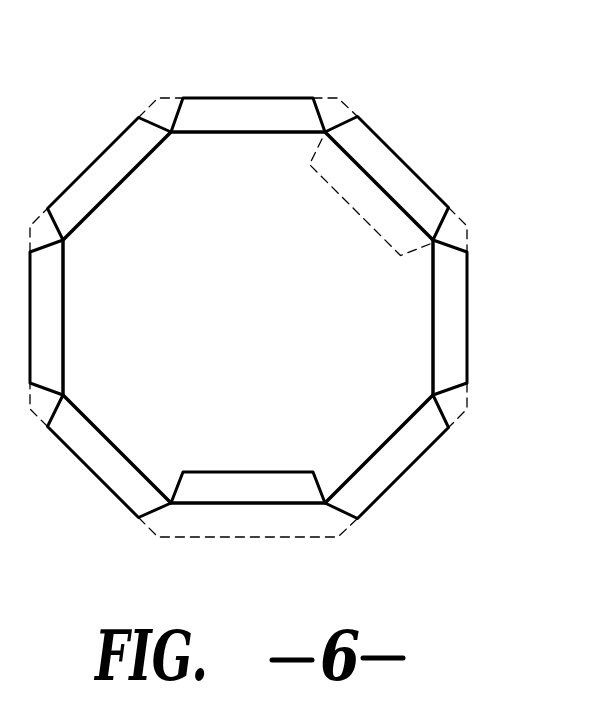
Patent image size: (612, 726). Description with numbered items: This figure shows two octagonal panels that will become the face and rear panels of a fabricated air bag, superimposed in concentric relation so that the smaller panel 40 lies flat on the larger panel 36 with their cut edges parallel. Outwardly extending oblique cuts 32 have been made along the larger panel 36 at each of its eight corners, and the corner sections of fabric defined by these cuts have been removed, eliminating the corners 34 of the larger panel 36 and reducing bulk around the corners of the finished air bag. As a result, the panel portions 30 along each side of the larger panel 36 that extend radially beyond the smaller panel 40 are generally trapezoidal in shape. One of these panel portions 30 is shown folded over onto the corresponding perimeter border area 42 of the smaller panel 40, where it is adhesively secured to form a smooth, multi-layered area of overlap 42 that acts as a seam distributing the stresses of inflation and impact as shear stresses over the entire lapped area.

The folded panel portions 30 is at (263, 488).
The oblique cuts 32 is at (345, 508).
The corners 34 is at (452, 403).
The larger panel 36 is at (412, 195).
The smaller panel 40 is at (226, 243).
The perimeter border areas 42 is at (355, 183).